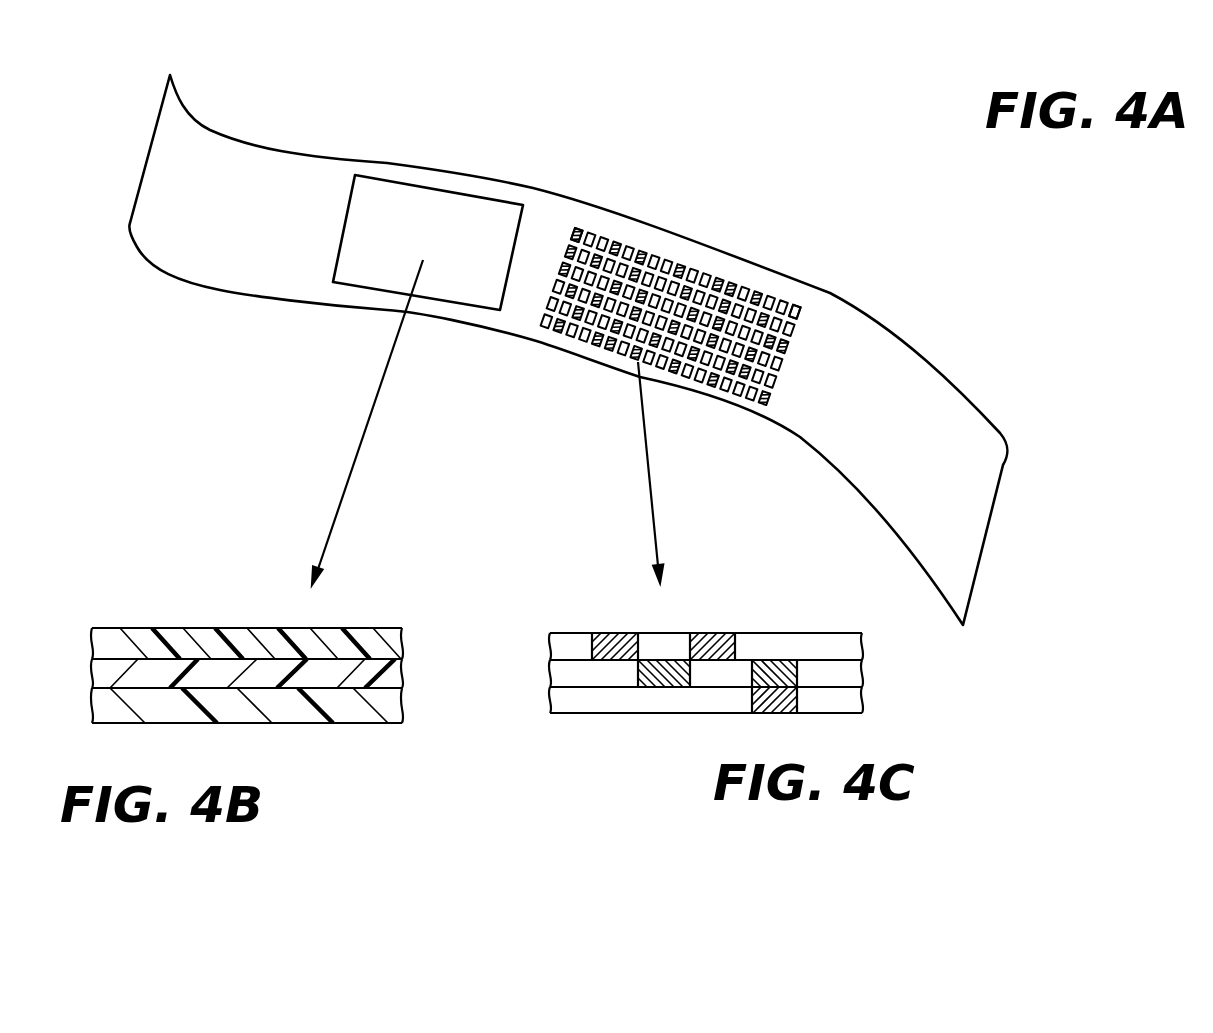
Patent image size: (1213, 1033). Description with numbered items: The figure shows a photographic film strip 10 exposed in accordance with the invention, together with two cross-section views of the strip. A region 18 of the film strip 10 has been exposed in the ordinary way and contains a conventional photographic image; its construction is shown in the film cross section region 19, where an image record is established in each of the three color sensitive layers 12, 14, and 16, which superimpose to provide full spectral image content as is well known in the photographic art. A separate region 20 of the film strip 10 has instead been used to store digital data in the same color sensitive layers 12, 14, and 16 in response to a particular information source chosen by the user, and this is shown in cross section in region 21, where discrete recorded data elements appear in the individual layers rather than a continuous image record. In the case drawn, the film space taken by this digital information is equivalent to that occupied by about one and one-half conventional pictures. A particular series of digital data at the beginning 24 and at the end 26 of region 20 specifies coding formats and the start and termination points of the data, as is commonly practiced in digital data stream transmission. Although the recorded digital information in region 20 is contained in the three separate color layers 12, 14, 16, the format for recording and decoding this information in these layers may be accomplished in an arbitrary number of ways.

In FIG. 4A, the photographic film strip 10 is at (217, 130).
In FIG. 4B, the color sensitive layer 12 is at (353, 629).
In FIG. 4C, the color sensitive layer 12 is at (581, 634).
In FIG. 4B, the color sensitive layer 14 is at (404, 668).
In FIG. 4C, the color sensitive layer 14 is at (550, 667).
In FIG. 4B, the color sensitive layer 16 is at (353, 723).
In FIG. 4C, the color sensitive layer 16 is at (580, 714).
In FIG. 4A, the region 18 is at (460, 188).
In FIG. 4B, the film cross section region 19 is at (272, 671).
In FIG. 4A, the region 20 is at (684, 258).
In FIG. 4C, the cross section region 21 is at (658, 676).
In FIG. 4A, the beginning of region 24 is at (576, 225).
In FIG. 4A, the end of region 26 is at (790, 301).